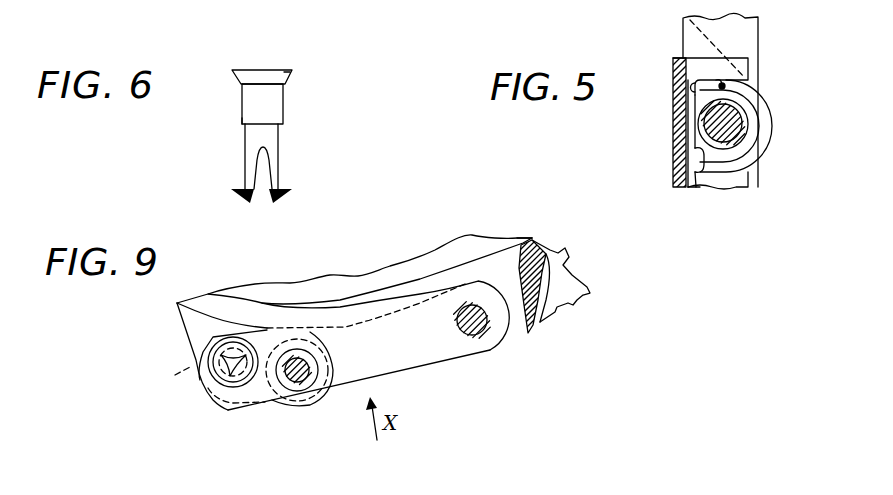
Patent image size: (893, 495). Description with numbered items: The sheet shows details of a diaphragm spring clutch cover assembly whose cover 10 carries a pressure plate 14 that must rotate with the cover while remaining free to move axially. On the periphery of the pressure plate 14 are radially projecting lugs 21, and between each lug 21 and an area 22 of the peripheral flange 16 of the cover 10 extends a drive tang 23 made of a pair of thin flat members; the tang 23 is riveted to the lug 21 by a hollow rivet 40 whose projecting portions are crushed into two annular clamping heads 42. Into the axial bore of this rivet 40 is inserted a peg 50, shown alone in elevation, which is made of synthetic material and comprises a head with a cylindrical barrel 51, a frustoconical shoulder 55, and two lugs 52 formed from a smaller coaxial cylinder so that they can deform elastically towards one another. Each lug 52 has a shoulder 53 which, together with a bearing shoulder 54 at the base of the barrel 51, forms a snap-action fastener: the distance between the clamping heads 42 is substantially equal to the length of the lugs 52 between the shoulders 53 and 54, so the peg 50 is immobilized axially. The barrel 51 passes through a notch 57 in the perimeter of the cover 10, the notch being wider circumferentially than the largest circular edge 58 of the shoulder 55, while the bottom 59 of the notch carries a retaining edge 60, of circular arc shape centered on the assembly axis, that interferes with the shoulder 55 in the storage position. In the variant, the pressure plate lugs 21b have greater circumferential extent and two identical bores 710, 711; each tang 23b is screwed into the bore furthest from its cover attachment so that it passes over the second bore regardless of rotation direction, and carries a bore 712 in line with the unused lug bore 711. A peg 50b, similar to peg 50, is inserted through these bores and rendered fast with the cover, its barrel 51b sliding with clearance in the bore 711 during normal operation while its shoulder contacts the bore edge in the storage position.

In FIG. 6, the peg 50 is at (281, 126).
In FIG. 5, the peg 50 is at (704, 141).
In FIG. 6, the cylindrical barrel 51 is at (282, 102).
In FIG. 5, the cylindrical barrel 51 is at (703, 125).
In FIG. 6, the lugs 52 is at (245, 162).
In FIG. 6, the shoulder 53 is at (234, 190).
In FIG. 6, the bearing shoulder 54 is at (243, 123).
In FIG. 6, the shoulder 55 is at (294, 78).
In FIG. 6, the largest diameter circular edge 58 is at (234, 69).
In FIG. 5, the peripheral flange 16 is at (752, 61).
In FIG. 9, the peripheral flange 16 is at (553, 308).
In FIG. 5, the lug 21 is at (758, 162).
In FIG. 5, the area 22 is at (700, 69).
In FIG. 5, the drive tang 23 is at (754, 143).
In FIG. 5, the hollow rivet 40 is at (752, 127).
In FIG. 5, the annular clamping heads 42 is at (745, 118).
In FIG. 5, the notch 57 is at (720, 84).
In FIG. 5, the bottom of the notch 59 is at (692, 89).
In FIG. 5, the retaining edge 60 is at (700, 188).
In FIG. 9, the cover 10 is at (565, 251).
In FIG. 9, the pressure plate 14 is at (512, 239).
In FIG. 9, the lug 21b is at (193, 340).
In FIG. 9, the tang 23b is at (496, 343).
In FIG. 9, the peg 50b is at (287, 358).
In FIG. 9, the barrel 51b is at (308, 366).
In FIG. 9, the bore 710 is at (200, 363).
In FIG. 9, the bore 711 is at (348, 273).
In FIG. 9, the bore 712 is at (300, 357).